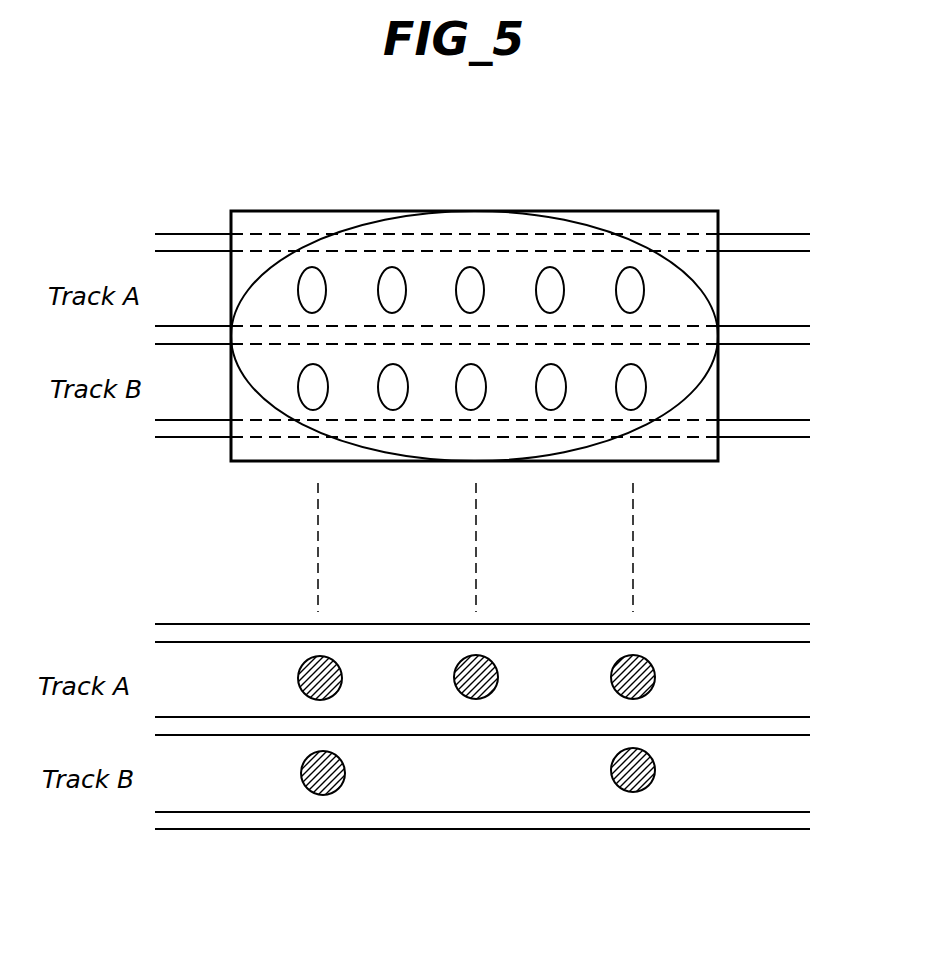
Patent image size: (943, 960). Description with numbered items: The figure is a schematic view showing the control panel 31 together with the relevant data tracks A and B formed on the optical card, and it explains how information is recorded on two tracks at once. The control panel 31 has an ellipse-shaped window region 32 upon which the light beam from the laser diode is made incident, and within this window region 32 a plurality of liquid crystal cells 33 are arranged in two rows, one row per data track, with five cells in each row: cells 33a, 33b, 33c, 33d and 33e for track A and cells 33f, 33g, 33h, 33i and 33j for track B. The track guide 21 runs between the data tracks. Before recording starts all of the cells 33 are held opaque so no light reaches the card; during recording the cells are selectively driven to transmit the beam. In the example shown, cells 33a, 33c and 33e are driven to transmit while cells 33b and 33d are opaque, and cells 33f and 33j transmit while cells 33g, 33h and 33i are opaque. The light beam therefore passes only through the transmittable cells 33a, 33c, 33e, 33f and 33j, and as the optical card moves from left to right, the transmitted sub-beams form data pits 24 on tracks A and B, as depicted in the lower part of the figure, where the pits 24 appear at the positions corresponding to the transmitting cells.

The track guide 21 is at (803, 242).
The data pits 24 is at (304, 663).
The control panel 31 is at (249, 211).
The ellipse-shaped window region 32 is at (588, 222).
The liquid crystal cells 33 is at (468, 327).
The liquid crystal cell 33a is at (630, 267).
The liquid crystal cell 33b is at (550, 267).
The liquid crystal cell 33c is at (470, 267).
The liquid crystal cell 33d is at (392, 267).
The liquid crystal cell 33e is at (312, 267).
The liquid crystal cell 33f is at (631, 410).
The liquid crystal cell 33g is at (551, 410).
The liquid crystal cell 33h is at (471, 410).
The liquid crystal cell 33i is at (393, 410).
The liquid crystal cell 33j is at (313, 410).